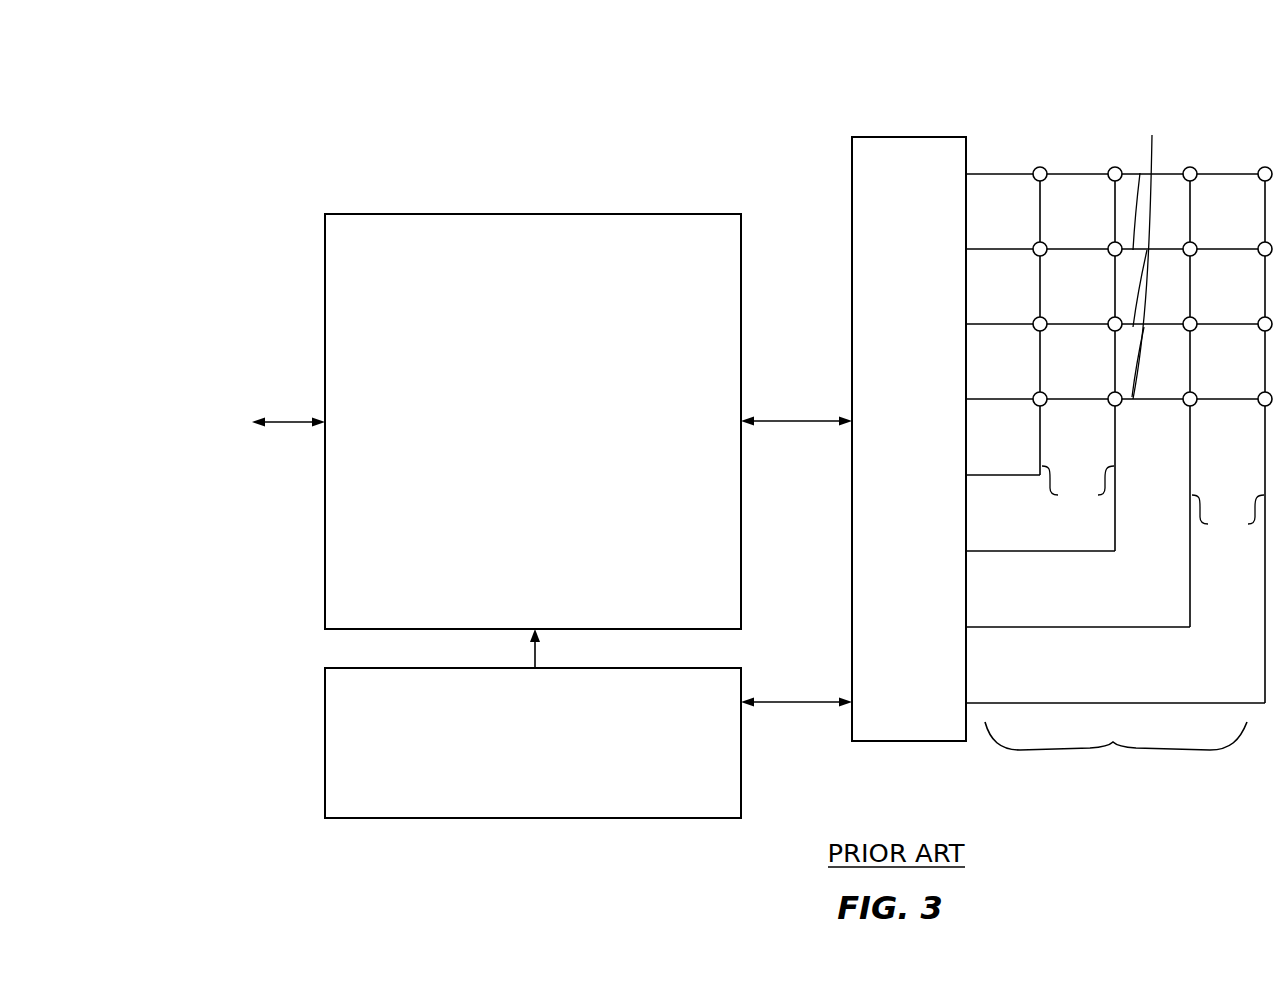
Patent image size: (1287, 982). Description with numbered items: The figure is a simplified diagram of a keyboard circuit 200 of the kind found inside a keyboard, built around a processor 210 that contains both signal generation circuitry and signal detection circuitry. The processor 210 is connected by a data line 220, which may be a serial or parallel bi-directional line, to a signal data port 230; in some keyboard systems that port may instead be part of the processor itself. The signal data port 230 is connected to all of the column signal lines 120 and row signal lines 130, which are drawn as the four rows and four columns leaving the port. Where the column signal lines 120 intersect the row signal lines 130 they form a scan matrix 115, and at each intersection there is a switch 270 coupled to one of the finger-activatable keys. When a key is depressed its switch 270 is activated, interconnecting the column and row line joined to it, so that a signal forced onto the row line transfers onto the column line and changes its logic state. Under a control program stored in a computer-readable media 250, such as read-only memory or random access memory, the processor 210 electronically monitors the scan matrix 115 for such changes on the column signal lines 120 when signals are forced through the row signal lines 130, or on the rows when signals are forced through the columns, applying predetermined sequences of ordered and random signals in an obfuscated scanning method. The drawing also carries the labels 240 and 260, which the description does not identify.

The keyboard circuit 200 is at (367, 57).
The processor 210 is at (443, 214).
The data line 220 is at (790, 410).
The signal data port 230 is at (903, 137).
The column line 240 is at (977, 465).
The computer-readable media 250 is at (572, 838).
The external bus 260 is at (290, 440).
The switch 270 is at (1040, 166).
The scan matrix 115 is at (1119, 396).
The column signal lines 120 is at (1124, 624).
The row signal lines 130 is at (1152, 253).